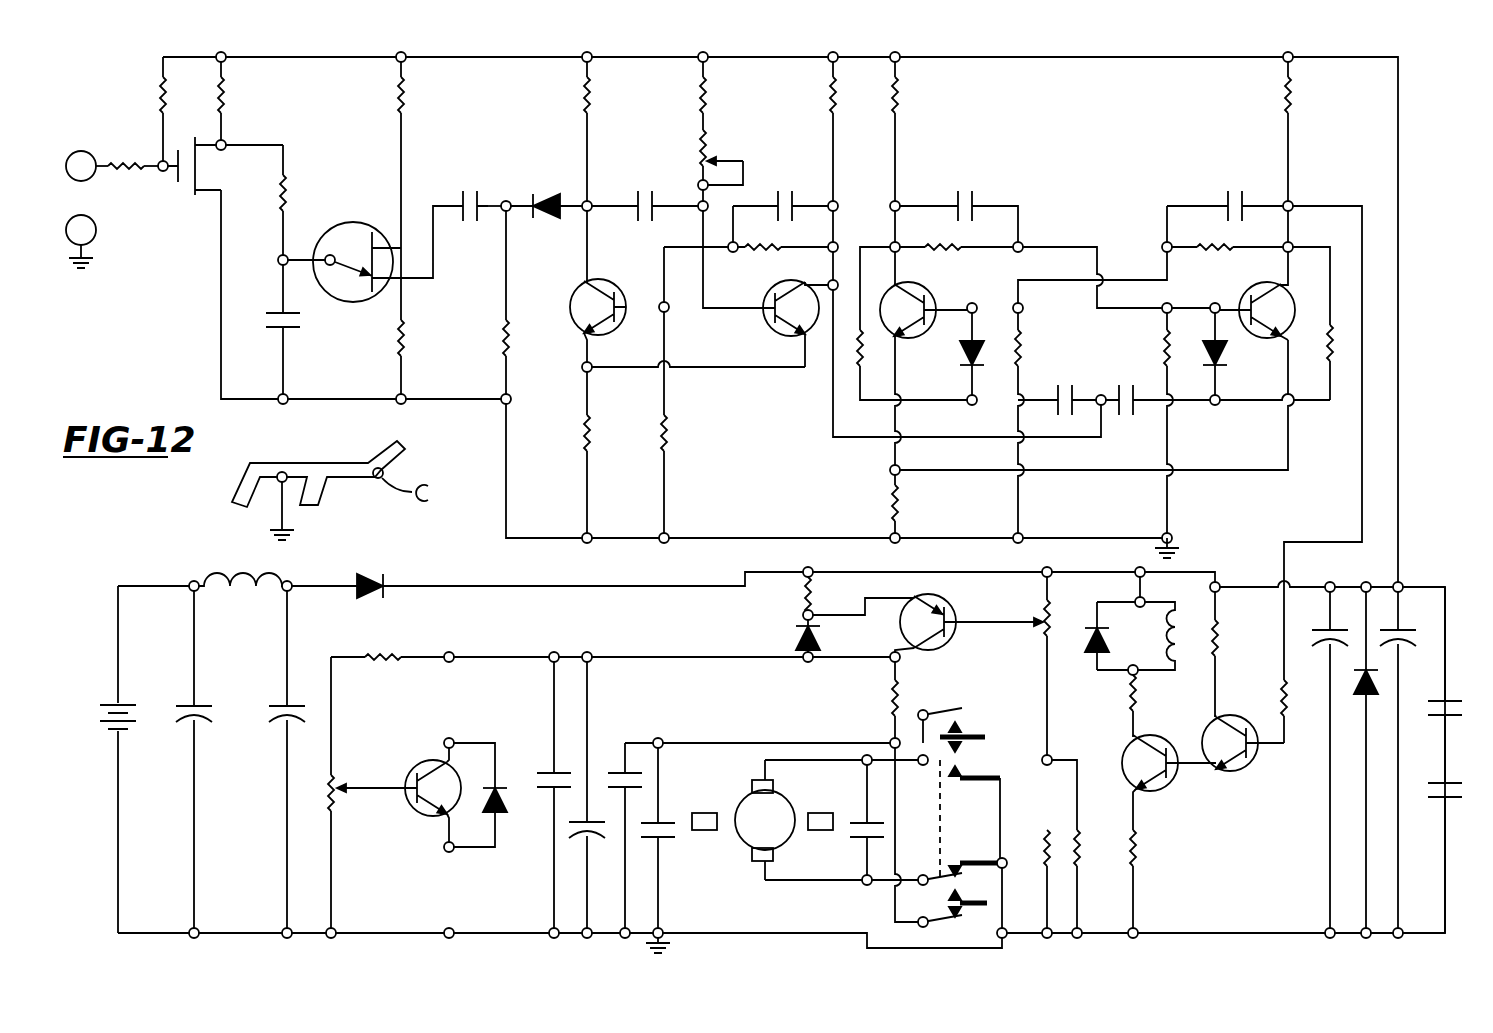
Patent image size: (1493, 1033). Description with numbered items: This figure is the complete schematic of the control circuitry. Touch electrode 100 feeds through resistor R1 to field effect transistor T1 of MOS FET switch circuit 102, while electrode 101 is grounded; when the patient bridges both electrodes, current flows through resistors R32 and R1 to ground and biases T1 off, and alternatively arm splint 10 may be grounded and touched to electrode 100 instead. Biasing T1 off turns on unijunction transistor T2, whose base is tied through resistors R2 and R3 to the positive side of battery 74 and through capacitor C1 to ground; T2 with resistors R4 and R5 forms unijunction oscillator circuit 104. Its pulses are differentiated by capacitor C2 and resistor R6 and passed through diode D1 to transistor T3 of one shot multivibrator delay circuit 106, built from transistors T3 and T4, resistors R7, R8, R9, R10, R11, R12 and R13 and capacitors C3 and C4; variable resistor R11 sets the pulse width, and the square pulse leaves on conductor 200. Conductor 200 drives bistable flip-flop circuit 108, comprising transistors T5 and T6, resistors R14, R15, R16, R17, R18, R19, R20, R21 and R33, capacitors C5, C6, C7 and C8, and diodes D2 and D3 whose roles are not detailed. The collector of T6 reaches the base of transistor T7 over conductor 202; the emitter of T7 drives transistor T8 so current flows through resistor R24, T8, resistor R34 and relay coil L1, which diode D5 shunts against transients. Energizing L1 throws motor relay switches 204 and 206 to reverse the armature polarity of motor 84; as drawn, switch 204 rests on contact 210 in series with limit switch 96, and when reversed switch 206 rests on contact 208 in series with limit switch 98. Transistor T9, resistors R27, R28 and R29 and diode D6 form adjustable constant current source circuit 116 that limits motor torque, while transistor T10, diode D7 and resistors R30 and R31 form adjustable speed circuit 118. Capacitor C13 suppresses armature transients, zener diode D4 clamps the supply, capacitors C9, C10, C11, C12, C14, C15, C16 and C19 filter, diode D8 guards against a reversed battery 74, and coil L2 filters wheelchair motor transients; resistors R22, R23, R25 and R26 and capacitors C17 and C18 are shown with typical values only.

The arm splint 10 is at (295, 463).
The battery 74 is at (100, 700).
The motor 84 is at (740, 800).
The limit switch 96 is at (943, 707).
The limit switch 98 is at (960, 930).
The touch electrode 100 is at (80, 151).
The electrode 101 is at (95, 250).
The MOS FET switch circuit 102 is at (176, 232).
The unijunction oscillator circuit 104 is at (420, 180).
The one shot multivibrator delay circuit 106 is at (742, 402).
The bistable flip-flop circuit 108 is at (1080, 172).
The adjustable constant current source circuit 116 is at (838, 673).
The adjustable speed circuit 118 is at (409, 838).
The conductor 200 is at (832, 398).
The conductor 202 is at (1362, 428).
The motor relay switch 204 is at (955, 776).
The motor relay switch 206 is at (947, 872).
The contact 208 is at (985, 885).
The contact 210 is at (975, 745).
The resistor R1 is at (142, 170).
The resistor R2 is at (227, 89).
The resistor R3 is at (288, 199).
The resistor R4 is at (410, 90).
The resistor R5 is at (410, 328).
The resistor R6 is at (509, 327).
The resistor R7 is at (595, 98).
The resistor R8 is at (589, 420).
The resistor R9 is at (668, 421).
The resistor R10 is at (708, 98).
The variable resistor R11 is at (702, 167).
The resistor R12 is at (778, 255).
The resistor R13 is at (828, 109).
The resistor R14 is at (898, 98).
The resistor R15 is at (901, 488).
The resistor R16 is at (936, 251).
The resistor R17 is at (1235, 254).
The resistor R18 is at (1024, 349).
The resistor R19 is at (1162, 343).
The resistor R20 is at (1292, 93).
The resistor R21 is at (1328, 357).
The resistor R22 is at (1285, 692).
The resistor R23 is at (1218, 628).
The resistor R24 is at (1138, 838).
The resistor R25 is at (1083, 840).
The resistor R26 is at (1032, 844).
The variable resistor R27 is at (1036, 606).
The resistor R28 is at (892, 706).
The resistor R29 is at (806, 600).
The resistor R30 is at (380, 656).
The variable resistor R31 is at (338, 804).
The resistor R32 is at (157, 96).
The resistor R33 is at (914, 323).
The resistor R34 is at (1130, 694).
The capacitor C1 is at (301, 330).
The capacitor C2 is at (460, 189).
The capacitor C3 is at (636, 190).
The capacitor C4 is at (797, 197).
The capacitor C5 is at (978, 194).
The capacitor C6 is at (1244, 192).
The capacitor C7 is at (1068, 413).
The capacitor C8 is at (1132, 411).
The capacitor C9 is at (1443, 781).
The capacitor C10 is at (1443, 700).
The capacitor C11 is at (1398, 630).
The capacitor C12 is at (1328, 630).
The capacitor C13 is at (863, 843).
The capacitor C14 is at (673, 844).
The capacitor C15 is at (597, 843).
The capacitor C16 is at (562, 786).
The capacitor C17 is at (280, 702).
The capacitor C18 is at (188, 702).
The capacitor C19 is at (635, 786).
The diode D1 is at (535, 190).
The diode D2 is at (992, 353).
The diode D3 is at (1226, 370).
The zener diode D4 is at (1365, 675).
The diode D5 is at (1093, 623).
The diode D6 is at (821, 628).
The diode D7 is at (503, 784).
The diode D8 is at (385, 572).
The relay coil L1 is at (1180, 622).
The coil L2 is at (230, 593).
The field effect transistor T1 is at (199, 205).
The unijunction transistor T2 is at (384, 226).
The transistor T3 is at (634, 282).
The transistor T4 is at (763, 319).
The transistor T5 is at (938, 342).
The transistor T6 is at (1255, 332).
The transistor T7 is at (1258, 715).
The transistor T8 is at (1185, 737).
The transistor T9 is at (933, 602).
The transistor T10 is at (431, 757).